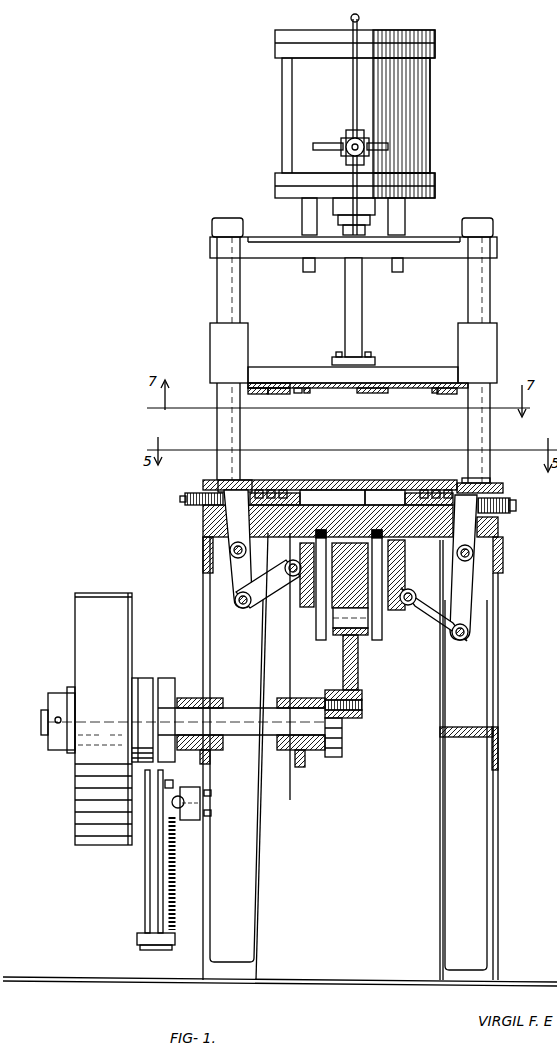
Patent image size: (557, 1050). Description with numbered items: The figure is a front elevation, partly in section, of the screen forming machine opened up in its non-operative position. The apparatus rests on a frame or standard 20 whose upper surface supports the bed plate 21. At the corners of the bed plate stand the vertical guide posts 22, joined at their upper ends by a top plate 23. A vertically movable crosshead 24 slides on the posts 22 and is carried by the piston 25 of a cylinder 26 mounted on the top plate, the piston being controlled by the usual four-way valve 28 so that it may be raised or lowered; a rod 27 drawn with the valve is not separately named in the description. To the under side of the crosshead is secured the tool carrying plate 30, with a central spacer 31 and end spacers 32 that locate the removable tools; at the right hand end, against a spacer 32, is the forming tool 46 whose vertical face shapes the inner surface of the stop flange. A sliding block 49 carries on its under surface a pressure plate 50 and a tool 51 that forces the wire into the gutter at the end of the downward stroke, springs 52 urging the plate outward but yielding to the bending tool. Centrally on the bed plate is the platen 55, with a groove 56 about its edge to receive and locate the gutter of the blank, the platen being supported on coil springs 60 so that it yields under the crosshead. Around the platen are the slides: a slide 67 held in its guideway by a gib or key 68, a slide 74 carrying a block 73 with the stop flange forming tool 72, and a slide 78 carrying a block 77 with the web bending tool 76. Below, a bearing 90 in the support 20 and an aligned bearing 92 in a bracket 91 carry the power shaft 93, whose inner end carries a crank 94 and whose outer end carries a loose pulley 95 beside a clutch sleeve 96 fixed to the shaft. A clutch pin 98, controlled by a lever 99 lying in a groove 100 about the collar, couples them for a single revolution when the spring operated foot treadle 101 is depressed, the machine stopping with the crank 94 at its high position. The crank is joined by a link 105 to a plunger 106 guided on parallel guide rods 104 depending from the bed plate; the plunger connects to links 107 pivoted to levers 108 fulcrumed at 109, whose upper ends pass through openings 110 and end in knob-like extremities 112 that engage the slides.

The frame or standard 20 is at (495, 828).
The bed plate 21 is at (498, 528).
The vertical guide posts 22 is at (221, 284).
The top plate 23 is at (497, 250).
The crosshead 24 is at (293, 372).
The piston 25 is at (363, 324).
The cylinder 26 is at (430, 160).
The rod 27 is at (352, 166).
The 4-way valve 28 is at (349, 140).
The tool carrying plate 30 is at (405, 390).
The spacer 31 is at (365, 392).
The spacers 32 is at (306, 391).
The forming tool 46 is at (447, 395).
The block 49 is at (275, 388).
The pressure plate 50 is at (276, 394).
The tool 51 is at (256, 394).
The springs 52 is at (298, 394).
The platen 55 is at (388, 502).
The groove 56 is at (449, 490).
The coil springs 60 is at (266, 490).
The slide 67 is at (343, 500).
The gib or key 68 is at (420, 492).
The tool for forming the stop flange 72 is at (466, 483).
The block 73 is at (503, 490).
The slide 74 is at (415, 512).
The tool for bending the web 76 is at (243, 490).
The block 77 is at (206, 481).
The slide 78 is at (283, 497).
The bearing 90 is at (220, 698).
The bracket 91 is at (297, 655).
The bearing 92 is at (303, 698).
The power shaft 93 is at (232, 714).
The crank 94 is at (343, 742).
The loose pulley 95 is at (122, 618).
The clutch sleeve 96 is at (148, 690).
The clutch pin 98 is at (186, 786).
The lever 99 is at (178, 782).
The groove 100 is at (170, 693).
The foot treadle 101 is at (168, 940).
The guide rods 104 is at (322, 630).
The link 105 is at (358, 665).
The plunger 106 is at (400, 575).
The links 107 is at (293, 568).
The levers 108 is at (241, 610).
The fulcrum 109 is at (236, 572).
The openings 110 is at (212, 538).
The knob-like extremities 112 is at (352, 565).